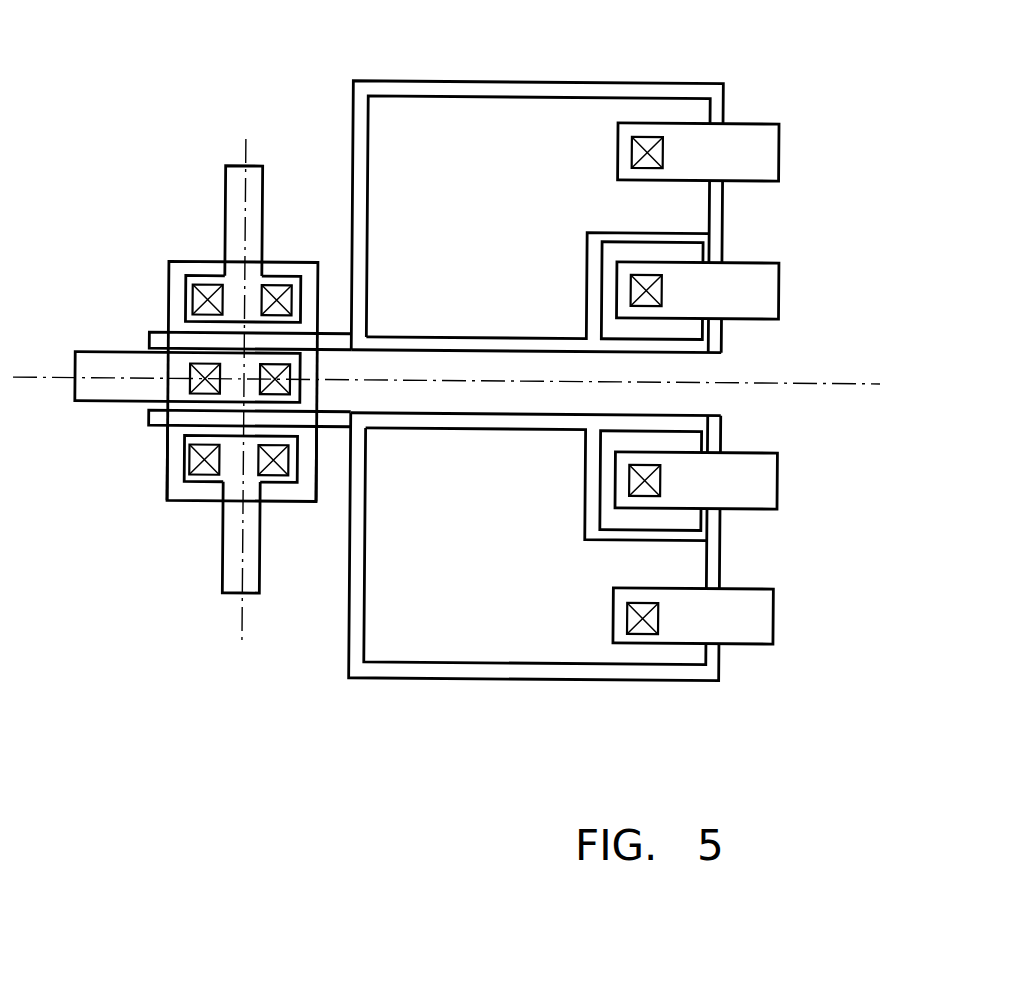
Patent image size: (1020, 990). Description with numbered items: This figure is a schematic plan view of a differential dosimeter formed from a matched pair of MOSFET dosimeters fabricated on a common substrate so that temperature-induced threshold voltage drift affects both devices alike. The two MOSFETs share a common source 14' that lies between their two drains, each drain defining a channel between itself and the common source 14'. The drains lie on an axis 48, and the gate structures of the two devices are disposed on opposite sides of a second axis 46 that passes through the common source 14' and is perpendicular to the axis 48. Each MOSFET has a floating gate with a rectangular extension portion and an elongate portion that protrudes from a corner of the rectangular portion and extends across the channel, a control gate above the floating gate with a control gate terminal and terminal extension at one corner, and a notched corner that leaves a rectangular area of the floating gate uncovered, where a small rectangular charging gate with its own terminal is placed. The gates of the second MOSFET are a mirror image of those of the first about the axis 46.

The common source 14' is at (161, 391).
The axis 46 is at (846, 388).
The axis 48 is at (242, 610).